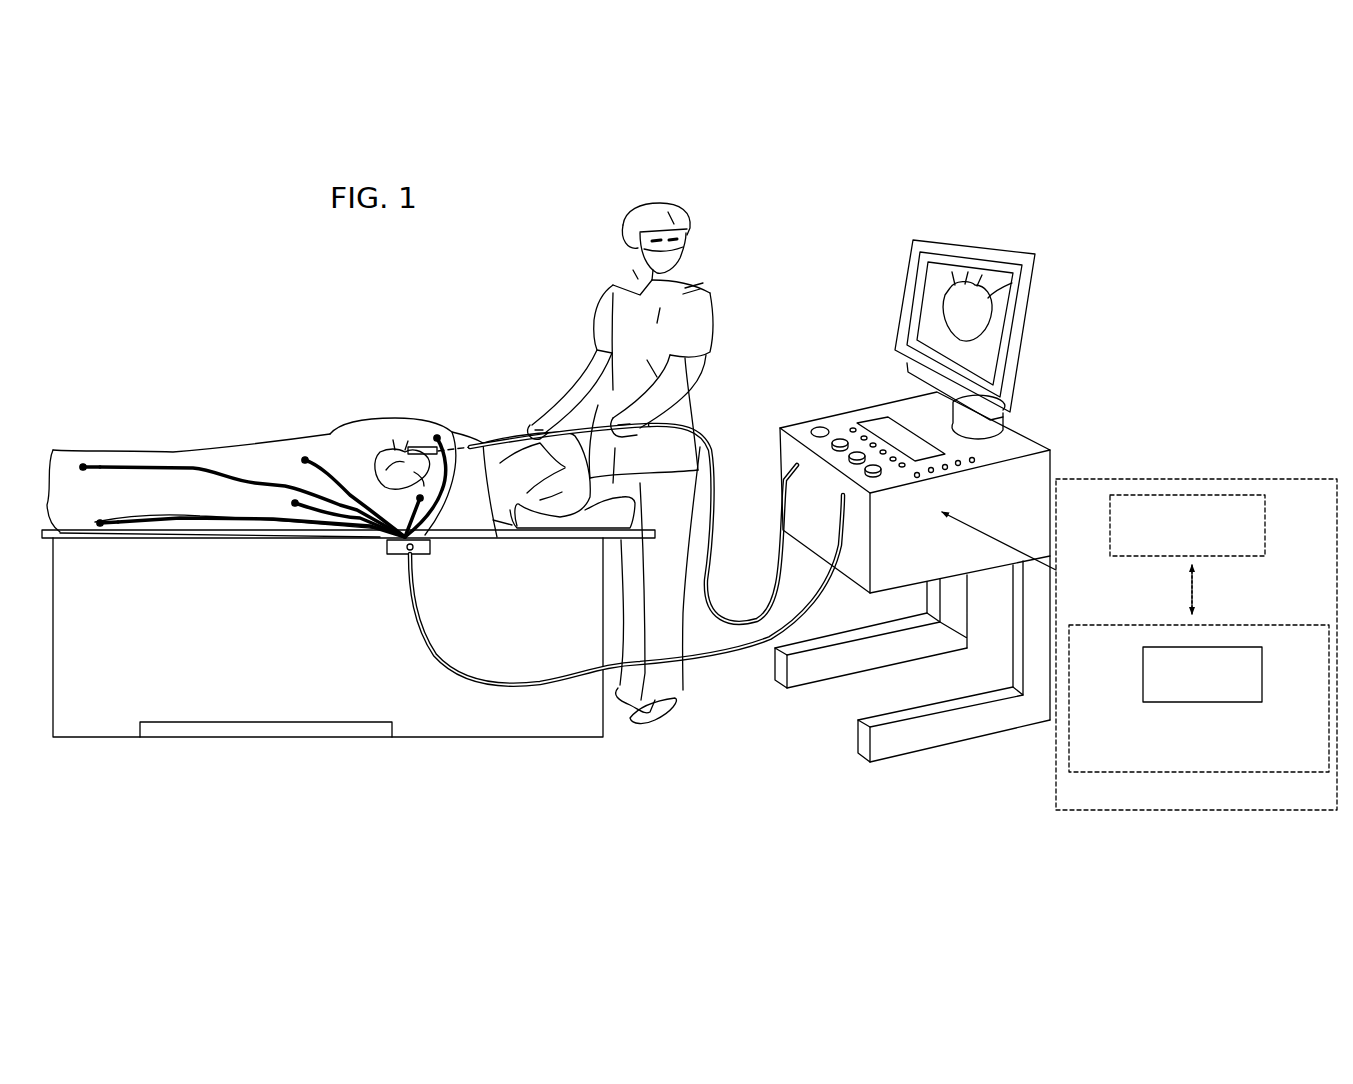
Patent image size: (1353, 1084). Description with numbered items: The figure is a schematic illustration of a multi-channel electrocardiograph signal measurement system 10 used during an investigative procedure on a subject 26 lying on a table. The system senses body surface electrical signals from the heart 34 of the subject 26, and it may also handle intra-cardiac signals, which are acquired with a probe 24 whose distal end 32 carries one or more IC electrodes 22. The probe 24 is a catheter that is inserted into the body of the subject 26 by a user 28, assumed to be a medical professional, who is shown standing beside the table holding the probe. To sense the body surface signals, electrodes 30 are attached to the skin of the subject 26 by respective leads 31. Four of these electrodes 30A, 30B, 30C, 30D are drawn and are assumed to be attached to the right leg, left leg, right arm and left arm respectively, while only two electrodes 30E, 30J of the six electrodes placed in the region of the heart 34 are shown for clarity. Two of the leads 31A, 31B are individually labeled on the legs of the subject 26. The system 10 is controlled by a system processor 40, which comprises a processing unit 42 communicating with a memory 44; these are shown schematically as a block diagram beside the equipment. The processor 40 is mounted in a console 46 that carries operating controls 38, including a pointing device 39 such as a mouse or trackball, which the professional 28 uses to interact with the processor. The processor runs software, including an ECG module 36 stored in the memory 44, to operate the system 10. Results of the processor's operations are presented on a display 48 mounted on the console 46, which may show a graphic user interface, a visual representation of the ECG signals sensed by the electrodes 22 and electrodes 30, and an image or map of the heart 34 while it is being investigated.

The multi-channel electrocardiograph (ECG) signal measurement system 10 is at (942, 188).
The IC electrodes 22 is at (375, 392).
The probe 24 is at (713, 443).
The subject 26 is at (318, 437).
The user 28 is at (623, 327).
The electrodes 30 is at (298, 390).
The electrode 30A is at (83, 462).
The electrode 30B is at (100, 527).
The electrode 30C is at (303, 457).
The electrode 30D is at (293, 505).
The electrode 30E is at (440, 436).
The electrode 30J is at (425, 505).
The leads 31 is at (252, 404).
The lead 31A is at (157, 466).
The lead 31B is at (150, 524).
The distal end 32 is at (400, 453).
The heart 34 is at (420, 444).
The ECG module 36 is at (1251, 702).
The operating controls 38 is at (905, 481).
The pointing device 39 is at (818, 428).
The system processor 40 is at (1139, 653).
The processing unit 42 is at (1126, 495).
The memory 44 is at (1140, 712).
The console 46 is at (867, 413).
The display 48 is at (947, 247).